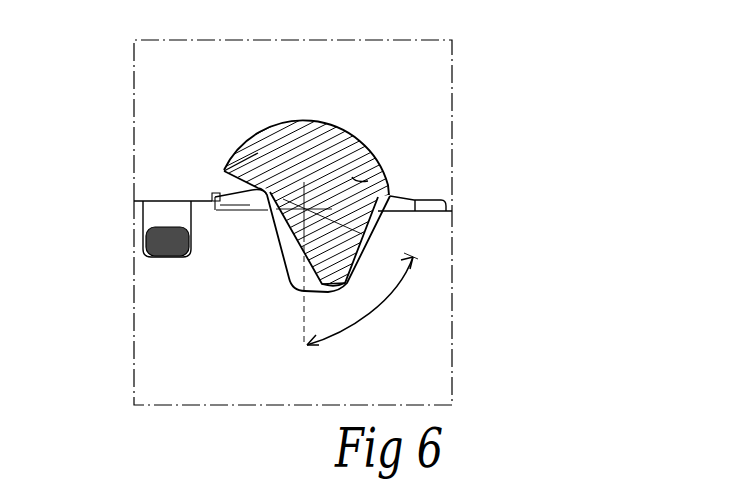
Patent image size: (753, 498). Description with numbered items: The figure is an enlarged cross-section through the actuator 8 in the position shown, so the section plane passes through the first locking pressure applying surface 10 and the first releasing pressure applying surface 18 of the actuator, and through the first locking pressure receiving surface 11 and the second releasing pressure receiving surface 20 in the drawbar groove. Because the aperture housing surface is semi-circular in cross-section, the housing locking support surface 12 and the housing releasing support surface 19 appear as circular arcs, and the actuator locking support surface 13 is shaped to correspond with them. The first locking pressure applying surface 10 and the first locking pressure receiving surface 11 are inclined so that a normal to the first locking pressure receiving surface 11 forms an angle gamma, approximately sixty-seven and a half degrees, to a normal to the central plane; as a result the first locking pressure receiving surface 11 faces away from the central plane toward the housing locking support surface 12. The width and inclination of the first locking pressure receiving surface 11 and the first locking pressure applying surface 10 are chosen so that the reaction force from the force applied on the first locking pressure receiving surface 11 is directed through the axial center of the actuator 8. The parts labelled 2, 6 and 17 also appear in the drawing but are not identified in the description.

The upper housing part 2 is at (152, 100).
The lower housing part 6 is at (425, 342).
The actuator 8 is at (295, 150).
The first locking pressure applying surface 10 is at (372, 231).
The first locking pressure receiving surface 11 is at (364, 262).
The housing locking support surface 12 is at (254, 170).
The actuator locking support surface 13 is at (228, 175).
The ball surface 17 is at (352, 177).
The first releasing pressure applying surface 18 is at (278, 231).
The housing releasing support surface 19 is at (384, 172).
The second releasing pressure receiving surface 20 is at (277, 227).